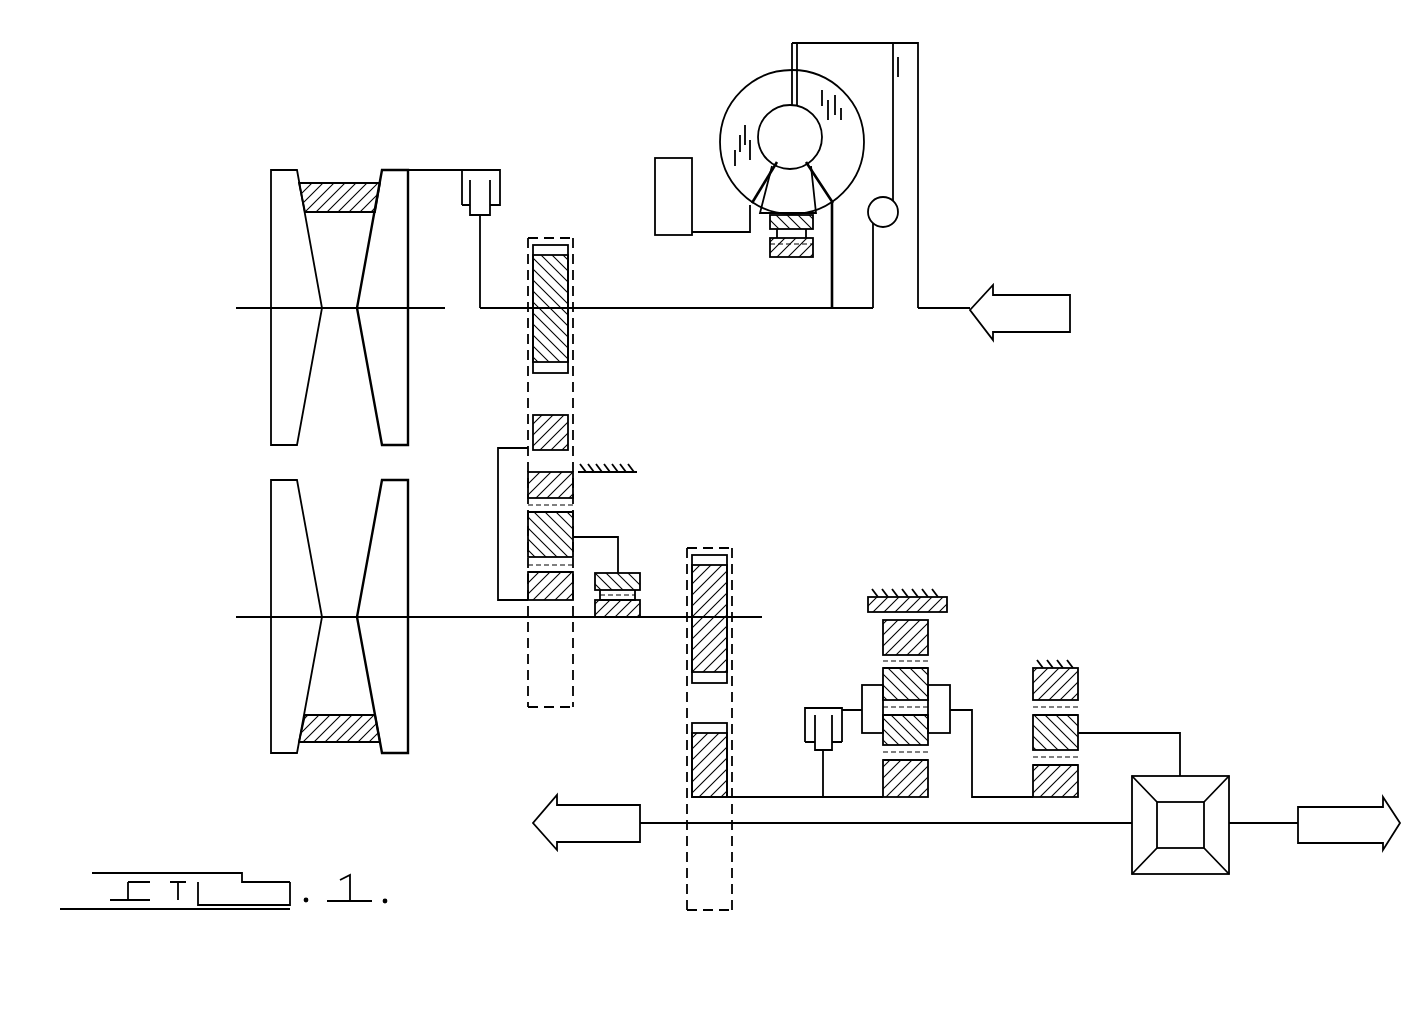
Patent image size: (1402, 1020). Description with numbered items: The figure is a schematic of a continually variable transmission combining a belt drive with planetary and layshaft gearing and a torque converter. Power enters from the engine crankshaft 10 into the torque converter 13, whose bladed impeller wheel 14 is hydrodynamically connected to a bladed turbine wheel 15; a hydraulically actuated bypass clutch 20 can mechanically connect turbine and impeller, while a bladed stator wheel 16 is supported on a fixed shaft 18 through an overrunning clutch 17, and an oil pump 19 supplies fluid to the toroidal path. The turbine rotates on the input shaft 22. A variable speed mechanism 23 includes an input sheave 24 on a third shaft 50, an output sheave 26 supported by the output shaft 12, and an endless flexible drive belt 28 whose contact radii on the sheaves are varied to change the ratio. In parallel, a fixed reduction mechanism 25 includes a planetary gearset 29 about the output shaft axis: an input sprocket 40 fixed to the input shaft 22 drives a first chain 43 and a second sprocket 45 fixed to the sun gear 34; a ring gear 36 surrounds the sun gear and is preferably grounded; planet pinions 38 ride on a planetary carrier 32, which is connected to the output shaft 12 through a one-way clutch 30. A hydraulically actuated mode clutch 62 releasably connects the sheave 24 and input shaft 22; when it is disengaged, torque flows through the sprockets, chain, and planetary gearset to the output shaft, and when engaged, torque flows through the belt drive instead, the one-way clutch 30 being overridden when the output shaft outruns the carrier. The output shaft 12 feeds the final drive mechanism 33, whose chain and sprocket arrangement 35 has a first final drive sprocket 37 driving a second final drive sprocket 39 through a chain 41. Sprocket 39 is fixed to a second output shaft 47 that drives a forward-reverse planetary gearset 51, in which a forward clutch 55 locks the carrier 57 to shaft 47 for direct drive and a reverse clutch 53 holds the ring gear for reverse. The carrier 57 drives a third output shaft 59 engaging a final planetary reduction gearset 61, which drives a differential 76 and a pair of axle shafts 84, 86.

The crankshaft 10 is at (953, 307).
The output shaft 12 is at (752, 620).
The torque converter 13 is at (786, 175).
The bladed impeller wheel 14 is at (782, 110).
The bladed turbine wheel 15 is at (855, 180).
The bladed stator wheel 16 is at (805, 210).
The overrunning clutch 17 is at (800, 250).
The fixed shaft 18 is at (770, 250).
The oil pump 19 is at (657, 166).
The bypass clutch 20 is at (890, 66).
The input shaft 22 is at (787, 312).
The variable speed mechanism 23 is at (299, 246).
The input sheave 24 is at (285, 357).
The fixed reduction mechanism 25 is at (541, 441).
The output sheave 26 is at (288, 570).
The endless flexible drive belt 28 is at (326, 187).
The planetary gearset 29 is at (722, 675).
The one-way clutch 30 is at (608, 616).
The planetary carrier 32 is at (607, 537).
The final drive mechanism 33 is at (971, 718).
The sun gear 34 is at (538, 598).
The chain and sprocket arrangement 35 is at (742, 832).
The ring gear 36 is at (531, 487).
The first final drive sprocket 37 is at (718, 573).
The planet pinions 38 is at (531, 543).
The second final drive sprocket 39 is at (698, 772).
The input sprocket 40 is at (532, 350).
The chain 41 is at (690, 727).
The first chain 43 is at (577, 395).
The second sprocket 45 is at (556, 432).
The second output shaft 47 is at (783, 797).
The third shaft 50 is at (248, 306).
The forward-reverse planetary gearset 51 is at (912, 808).
The reverse clutch 53 is at (947, 605).
The forward clutch 55 is at (805, 718).
The carrier 57 is at (945, 685).
The third output shaft 59 is at (1000, 797).
The final planetary reduction gearset 61 is at (1095, 686).
The mode clutch 62 is at (476, 188).
The differential 76 is at (1232, 771).
The axle shaft 84 is at (1265, 828).
The axle shaft 86 is at (655, 826).